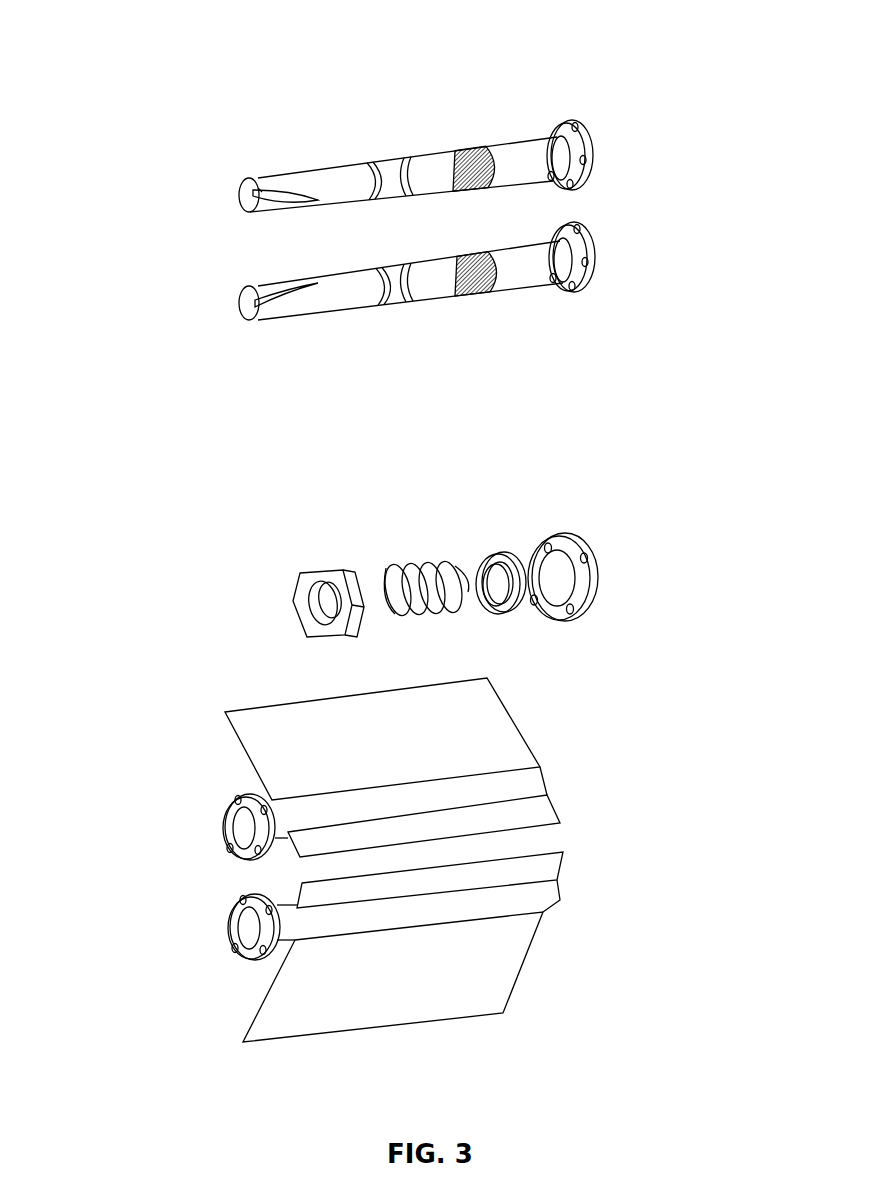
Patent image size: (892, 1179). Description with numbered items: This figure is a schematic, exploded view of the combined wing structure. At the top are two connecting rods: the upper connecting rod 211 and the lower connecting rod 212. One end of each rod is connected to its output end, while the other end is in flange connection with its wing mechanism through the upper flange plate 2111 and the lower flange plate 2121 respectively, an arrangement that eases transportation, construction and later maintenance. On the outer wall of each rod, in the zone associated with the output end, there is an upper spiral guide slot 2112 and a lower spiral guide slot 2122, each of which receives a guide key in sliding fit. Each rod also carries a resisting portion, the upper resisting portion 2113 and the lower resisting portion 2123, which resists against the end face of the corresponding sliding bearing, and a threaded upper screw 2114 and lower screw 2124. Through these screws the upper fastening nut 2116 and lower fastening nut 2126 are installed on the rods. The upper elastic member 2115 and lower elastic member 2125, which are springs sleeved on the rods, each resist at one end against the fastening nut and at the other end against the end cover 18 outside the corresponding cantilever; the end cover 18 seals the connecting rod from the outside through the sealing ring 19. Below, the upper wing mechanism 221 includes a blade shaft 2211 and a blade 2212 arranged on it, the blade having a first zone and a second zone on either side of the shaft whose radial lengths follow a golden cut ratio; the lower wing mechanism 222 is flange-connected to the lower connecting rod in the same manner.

The upper connecting rod 211 is at (418, 125).
The upper flange plate 2111 is at (590, 130).
The upper spiral guide slot 2112 is at (262, 183).
The upper resisting portion 2113 is at (368, 160).
The upper screw 2114 is at (456, 150).
The lower connecting rod 212 is at (417, 302).
The lower flange plate 2121 is at (592, 275).
The lower spiral guide slot 2122 is at (258, 305).
The lower resisting portion 2123 is at (372, 300).
The lower screw 2124 is at (468, 292).
The upper fastening nut 2116 is at (209, 551).
The lower fastening nut 2126 is at (298, 588).
The upper elastic member 2115 is at (370, 542).
The lower elastic member 2125 is at (432, 565).
The sealing ring 19 is at (497, 555).
The end cover 18 is at (590, 552).
The upper wing mechanism 221 is at (521, 752).
The blade 2212 is at (508, 747).
The blade shaft 2211 is at (556, 792).
The lower wing mechanism 222 is at (533, 946).